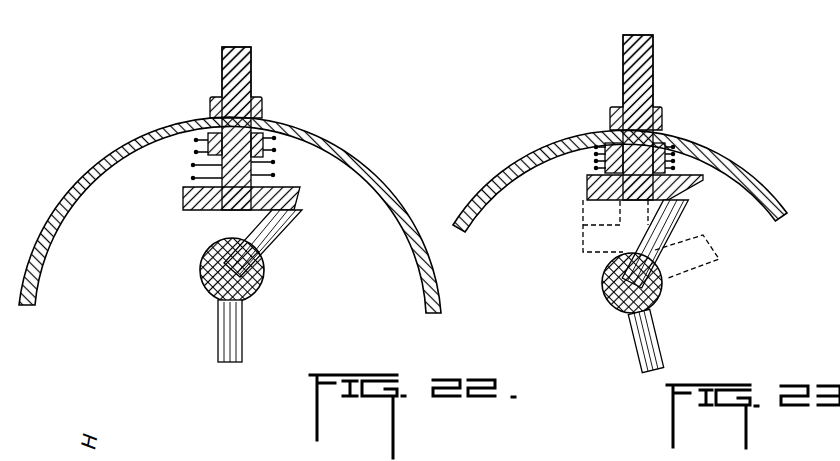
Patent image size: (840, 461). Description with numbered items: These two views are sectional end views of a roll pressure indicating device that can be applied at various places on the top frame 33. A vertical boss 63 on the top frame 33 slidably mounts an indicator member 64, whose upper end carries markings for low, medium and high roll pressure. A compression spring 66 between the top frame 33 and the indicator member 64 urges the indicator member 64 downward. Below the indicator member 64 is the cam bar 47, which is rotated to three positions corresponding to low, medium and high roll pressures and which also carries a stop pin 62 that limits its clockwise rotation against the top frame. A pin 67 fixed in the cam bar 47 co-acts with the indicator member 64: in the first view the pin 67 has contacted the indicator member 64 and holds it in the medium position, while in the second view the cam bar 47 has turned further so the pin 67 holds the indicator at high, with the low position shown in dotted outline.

In FIG. 22, the top frame 33 is at (368, 162).
In FIG. 23, the top frame 33 is at (567, 134).
In FIG. 22, the vertical boss 63 is at (262, 107).
In FIG. 23, the vertical boss 63 is at (662, 112).
In FIG. 22, the compression spring 66 is at (274, 174).
In FIG. 23, the compression spring 66 is at (676, 158).
In FIG. 22, the indicator member 64 is at (200, 211).
In FIG. 23, the indicator member 64 is at (586, 200).
In FIG. 22, the pin 67 is at (280, 238).
In FIG. 23, the pin 67 is at (686, 220).
In FIG. 22, the cam bar 47 is at (262, 284).
In FIG. 23, the cam bar 47 is at (602, 284).
In FIG. 22, the stop pin 62 is at (218, 335).
In FIG. 23, the stop pin 62 is at (660, 335).